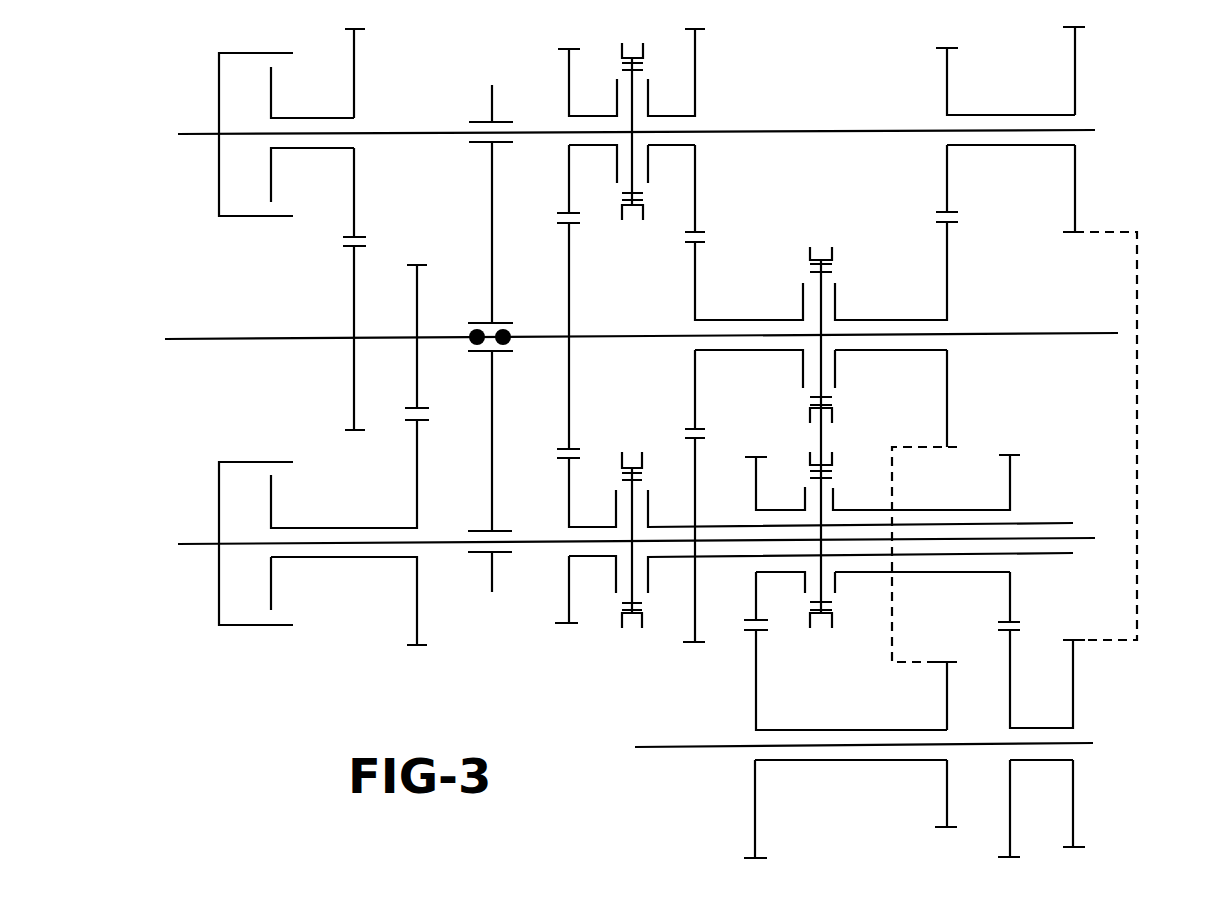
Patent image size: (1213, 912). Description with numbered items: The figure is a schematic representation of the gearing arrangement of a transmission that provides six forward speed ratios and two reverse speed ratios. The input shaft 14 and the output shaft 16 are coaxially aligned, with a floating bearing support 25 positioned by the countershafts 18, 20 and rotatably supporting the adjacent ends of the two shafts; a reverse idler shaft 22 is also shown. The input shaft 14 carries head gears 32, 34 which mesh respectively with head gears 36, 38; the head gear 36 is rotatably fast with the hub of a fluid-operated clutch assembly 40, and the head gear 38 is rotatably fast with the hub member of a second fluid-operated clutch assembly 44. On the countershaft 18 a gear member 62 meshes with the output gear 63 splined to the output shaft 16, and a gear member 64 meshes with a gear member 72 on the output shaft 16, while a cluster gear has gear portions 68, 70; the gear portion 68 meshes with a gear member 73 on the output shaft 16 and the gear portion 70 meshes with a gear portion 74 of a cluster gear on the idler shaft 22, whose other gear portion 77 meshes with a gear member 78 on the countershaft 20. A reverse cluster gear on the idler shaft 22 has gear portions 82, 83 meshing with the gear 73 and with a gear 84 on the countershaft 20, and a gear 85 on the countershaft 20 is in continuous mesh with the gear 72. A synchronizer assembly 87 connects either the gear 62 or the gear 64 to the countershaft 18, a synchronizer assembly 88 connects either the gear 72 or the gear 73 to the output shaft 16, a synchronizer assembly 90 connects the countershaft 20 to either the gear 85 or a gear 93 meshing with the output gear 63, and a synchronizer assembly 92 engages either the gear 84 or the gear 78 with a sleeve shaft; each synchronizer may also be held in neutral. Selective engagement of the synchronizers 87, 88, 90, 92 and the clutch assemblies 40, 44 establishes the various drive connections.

The input shaft 14 is at (240, 340).
The output shaft 16 is at (1063, 335).
The countershaft 18 is at (836, 130).
The countershaft 20 is at (533, 538).
The reverse idler shaft 22 is at (678, 749).
The floating bearing support 25 is at (492, 200).
The head gear 32 is at (354, 286).
The head gear 34 is at (417, 300).
The head gear 36 is at (355, 78).
The head gear 38 is at (417, 470).
The clutch assembly 40 is at (258, 46).
The clutch assembly 44 is at (255, 630).
The gear member 62 is at (569, 95).
The output gear 63 is at (569, 286).
The gear member 64 is at (695, 73).
The gear portion 68 is at (947, 188).
The gear portion 70 is at (1075, 72).
The gear member 72 is at (695, 286).
The gear member 73 is at (947, 286).
The gear portion 74 is at (1073, 685).
The gear portion 77 is at (1012, 665).
The gear member 78 is at (1012, 490).
The gear portion 82 is at (947, 790).
The gear portion 83 is at (755, 820).
The gear 84 is at (756, 605).
The gear 85 is at (695, 455).
The synchronizer assembly 87 is at (633, 44).
The synchronizer assembly 88 is at (820, 246).
The synchronizer assembly 90 is at (630, 632).
The synchronizer assembly 92 is at (818, 632).
The gear 93 is at (568, 585).